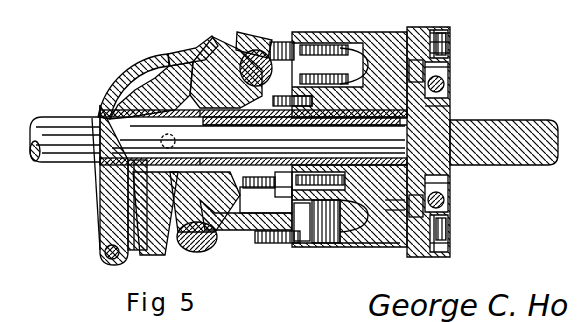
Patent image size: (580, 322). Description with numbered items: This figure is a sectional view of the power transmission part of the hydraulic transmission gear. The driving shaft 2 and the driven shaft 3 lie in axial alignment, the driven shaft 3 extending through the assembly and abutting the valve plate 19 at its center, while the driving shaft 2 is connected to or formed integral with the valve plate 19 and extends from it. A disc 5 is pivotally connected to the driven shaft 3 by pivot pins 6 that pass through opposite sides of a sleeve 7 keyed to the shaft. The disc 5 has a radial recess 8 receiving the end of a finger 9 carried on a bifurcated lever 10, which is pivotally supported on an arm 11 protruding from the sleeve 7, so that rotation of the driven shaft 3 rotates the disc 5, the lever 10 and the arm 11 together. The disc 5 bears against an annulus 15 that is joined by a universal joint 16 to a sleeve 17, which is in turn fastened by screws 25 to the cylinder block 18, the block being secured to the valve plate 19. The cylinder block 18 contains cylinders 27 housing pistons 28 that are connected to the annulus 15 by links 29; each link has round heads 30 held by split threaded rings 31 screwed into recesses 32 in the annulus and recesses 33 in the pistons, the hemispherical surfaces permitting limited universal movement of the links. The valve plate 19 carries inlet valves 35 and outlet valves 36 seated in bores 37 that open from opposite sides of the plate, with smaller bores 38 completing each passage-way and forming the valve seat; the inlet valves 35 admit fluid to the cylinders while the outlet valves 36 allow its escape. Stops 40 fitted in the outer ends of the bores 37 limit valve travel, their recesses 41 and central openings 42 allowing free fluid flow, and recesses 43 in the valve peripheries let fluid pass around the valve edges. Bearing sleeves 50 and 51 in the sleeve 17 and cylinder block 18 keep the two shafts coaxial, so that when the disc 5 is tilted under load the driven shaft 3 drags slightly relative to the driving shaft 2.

The driving shaft 2 is at (522, 121).
The driven shaft 3 is at (45, 121).
The disc 5 is at (213, 58).
The pivot pins 6 is at (178, 136).
The sleeve 7 is at (106, 110).
The recess 8 is at (205, 58).
The finger 9 is at (136, 72).
The bifurcated lever 10 is at (96, 178).
The arm 11 is at (110, 226).
The annulus 15 is at (249, 32).
The universal joint 16 is at (246, 60).
The sleeve 17 is at (252, 186).
The cylinder block 18 is at (364, 247).
The valve plate 19 is at (466, 122).
The screws 25 is at (315, 243).
The cylinders 27 is at (398, 247).
The pistons 28 is at (330, 245).
The links 29 is at (238, 234).
The round heads 30 is at (358, 62).
The split threaded rings 31 is at (207, 252).
The recesses 32 is at (278, 45).
The recesses 33 is at (284, 241).
The inlet valves 35 is at (416, 68).
The outlet valves 36 is at (448, 31).
The bores 37 is at (450, 67).
The smaller bores 38 is at (446, 84).
The stops 40 is at (450, 42).
The recesses 41 is at (450, 33).
The central openings 42 is at (450, 53).
The recesses 43 is at (436, 32).
The bearing sleeve 50 is at (270, 119).
The bearing sleeve 51 is at (383, 119).